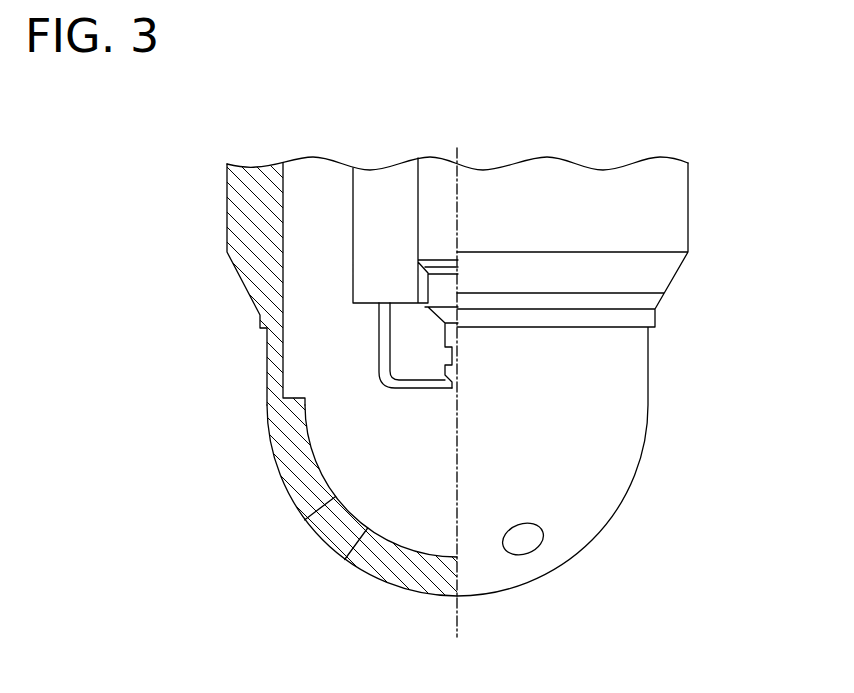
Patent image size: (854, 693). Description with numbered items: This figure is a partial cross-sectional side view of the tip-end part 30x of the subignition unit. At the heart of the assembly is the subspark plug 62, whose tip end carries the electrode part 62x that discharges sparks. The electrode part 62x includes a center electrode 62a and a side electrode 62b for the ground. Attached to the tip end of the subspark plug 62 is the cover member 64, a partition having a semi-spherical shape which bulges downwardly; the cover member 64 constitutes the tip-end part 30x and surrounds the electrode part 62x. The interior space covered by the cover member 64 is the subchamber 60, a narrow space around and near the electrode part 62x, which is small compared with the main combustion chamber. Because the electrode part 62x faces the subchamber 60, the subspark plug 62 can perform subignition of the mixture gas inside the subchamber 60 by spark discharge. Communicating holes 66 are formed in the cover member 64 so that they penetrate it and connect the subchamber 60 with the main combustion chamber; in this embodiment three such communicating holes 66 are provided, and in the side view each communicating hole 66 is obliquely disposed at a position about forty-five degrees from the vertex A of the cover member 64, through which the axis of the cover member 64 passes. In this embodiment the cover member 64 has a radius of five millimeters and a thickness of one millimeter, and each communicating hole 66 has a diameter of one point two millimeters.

The tip-end part 30x is at (677, 140).
The subspark plug 62 is at (434, 150).
The center electrode 62a is at (432, 381).
The side electrode 62b is at (401, 395).
The electrode part 62x is at (401, 403).
The subchamber 60 is at (318, 424).
The cover member 64 is at (378, 578).
The communicating hole 66 is at (322, 515).
The vertex A is at (457, 597).